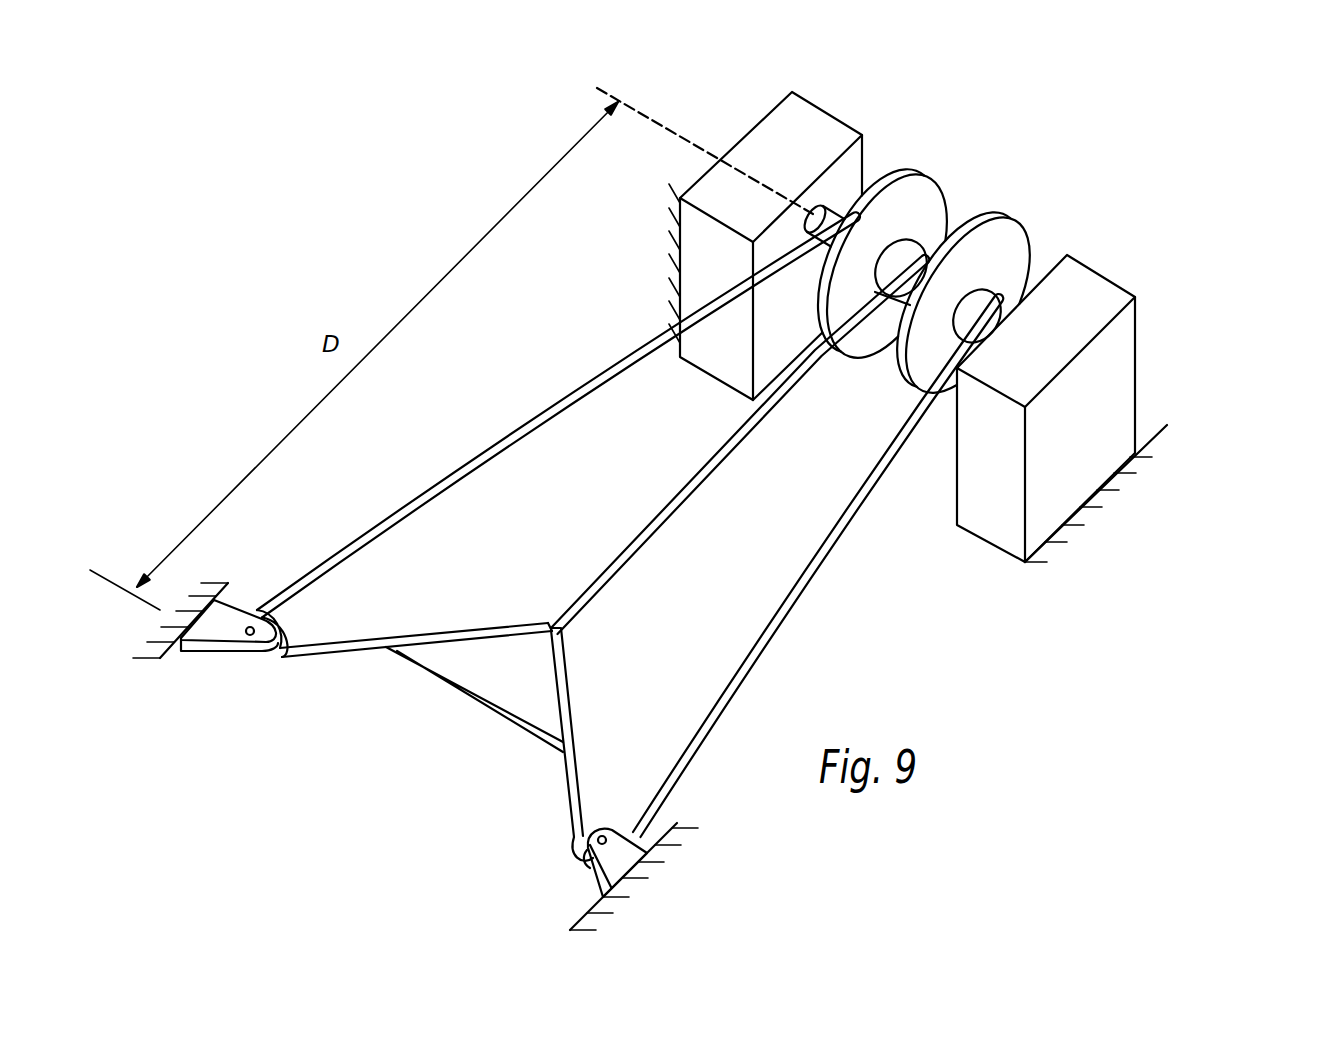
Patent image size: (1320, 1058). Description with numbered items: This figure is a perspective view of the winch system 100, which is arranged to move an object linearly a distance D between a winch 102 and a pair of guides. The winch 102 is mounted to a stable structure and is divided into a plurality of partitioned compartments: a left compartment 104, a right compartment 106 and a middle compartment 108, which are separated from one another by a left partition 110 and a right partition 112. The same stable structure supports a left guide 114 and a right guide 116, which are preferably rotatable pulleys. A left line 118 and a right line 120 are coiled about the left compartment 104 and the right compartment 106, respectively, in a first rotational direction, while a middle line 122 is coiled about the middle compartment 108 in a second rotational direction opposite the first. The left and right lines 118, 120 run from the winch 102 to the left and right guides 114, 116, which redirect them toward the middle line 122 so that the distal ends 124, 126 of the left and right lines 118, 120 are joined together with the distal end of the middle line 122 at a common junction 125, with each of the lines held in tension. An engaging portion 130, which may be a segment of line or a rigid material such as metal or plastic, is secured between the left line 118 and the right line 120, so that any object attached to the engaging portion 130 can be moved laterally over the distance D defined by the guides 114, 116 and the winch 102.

The winch system 100 is at (1172, 229).
The winch 102 is at (1158, 420).
The left compartment 104 is at (825, 216).
The right compartment 106 is at (1014, 237).
The middle compartment 108 is at (899, 258).
The left partition 110 is at (890, 188).
The right partition 112 is at (977, 232).
The left guide 114 is at (193, 650).
The right guide 116 is at (615, 862).
The left line 118 is at (557, 400).
The right line 120 is at (838, 528).
The middle line 122 is at (707, 470).
The distal end of left line 124 is at (528, 622).
The cable junction 125 is at (557, 630).
The distal end of right line 126 is at (562, 703).
The engaging portion 130 is at (497, 712).